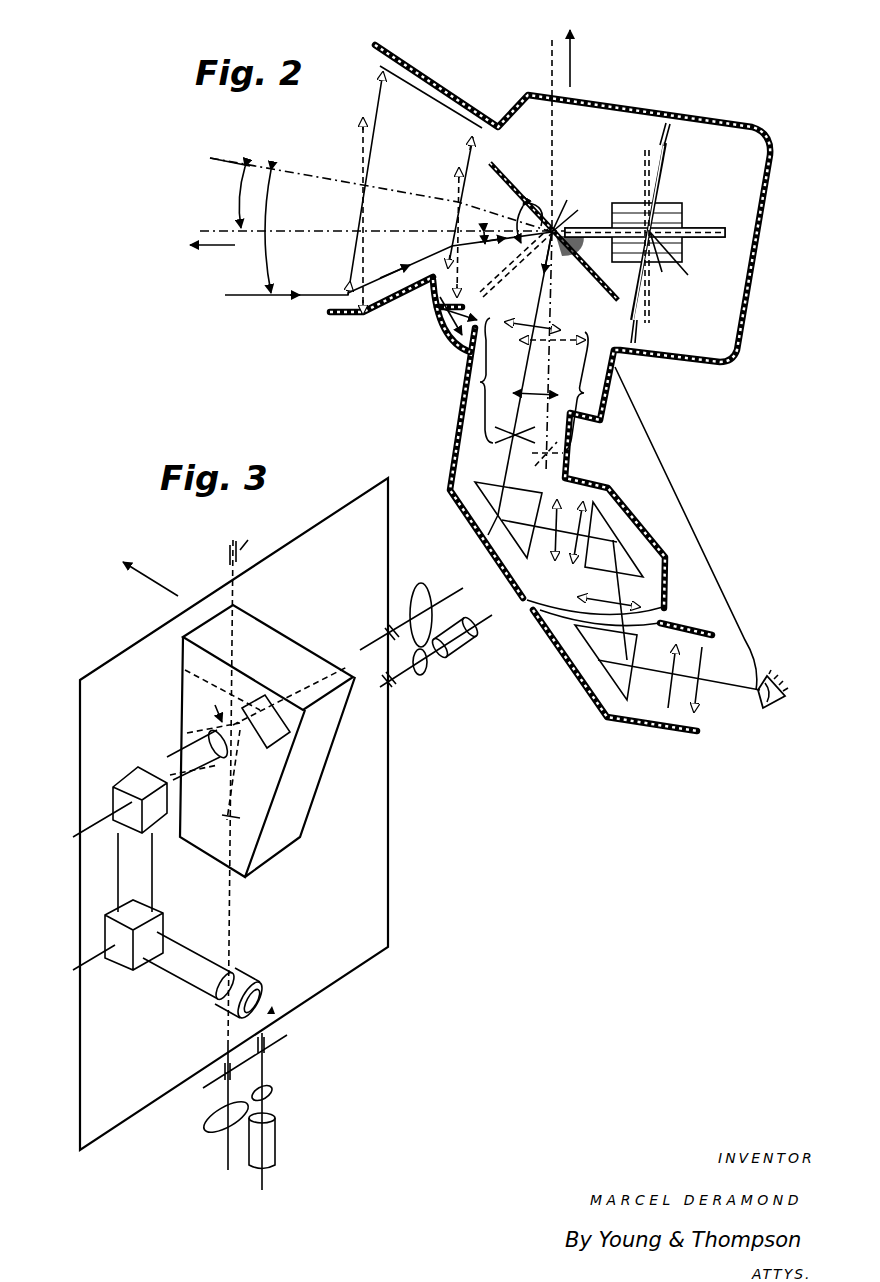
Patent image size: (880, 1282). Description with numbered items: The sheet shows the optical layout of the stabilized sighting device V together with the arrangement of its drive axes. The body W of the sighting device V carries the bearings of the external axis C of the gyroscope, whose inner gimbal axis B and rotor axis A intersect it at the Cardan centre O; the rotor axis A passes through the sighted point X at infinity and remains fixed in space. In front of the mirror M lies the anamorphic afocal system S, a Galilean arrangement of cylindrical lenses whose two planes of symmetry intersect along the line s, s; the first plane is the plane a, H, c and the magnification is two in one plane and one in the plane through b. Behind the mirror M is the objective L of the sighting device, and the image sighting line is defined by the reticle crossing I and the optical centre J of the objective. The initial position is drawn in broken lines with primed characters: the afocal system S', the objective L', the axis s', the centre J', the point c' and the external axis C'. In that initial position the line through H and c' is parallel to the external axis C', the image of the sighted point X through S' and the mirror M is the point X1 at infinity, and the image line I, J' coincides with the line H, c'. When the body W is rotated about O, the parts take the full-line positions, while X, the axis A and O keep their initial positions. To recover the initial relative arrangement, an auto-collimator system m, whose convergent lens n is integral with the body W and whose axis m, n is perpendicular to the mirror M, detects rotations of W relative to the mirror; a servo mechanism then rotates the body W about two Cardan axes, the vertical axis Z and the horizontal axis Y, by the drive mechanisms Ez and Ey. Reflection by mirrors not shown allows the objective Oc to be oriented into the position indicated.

In FIG. 2, the body of the sighting device W is at (697, 366).
In FIG. 3, the body of the sighting device W is at (320, 745).
In FIG. 2, the auto-collimator system m is at (445, 338).
In FIG. 3, the auto-collimator system m is at (190, 735).
In FIG. 2, the convergent lens of the auto-collimator n is at (463, 347).
In FIG. 3, the convergent lens of the auto-collimator n is at (212, 707).
In FIG. 2, the sighted point at infinity X is at (212, 258).
In FIG. 3, the sighted point at infinity X is at (150, 579).
In FIG. 2, the image point at infinity X1 is at (575, 131).
In FIG. 2, the axis point a is at (382, 195).
In FIG. 2, the objective L is at (388, 257).
In FIG. 2, the objective in initial position L' is at (570, 399).
In FIG. 2, the reticle crossing I is at (515, 422).
In FIG. 3, the reticle crossing I is at (173, 777).
In FIG. 2, the anamorphic afocal system S is at (431, 96).
In FIG. 2, the anamorphic afocal system in initial position S' is at (437, 135).
In FIG. 2, the axis of the anamorphic system s is at (423, 183).
In FIG. 3, the axis of the anamorphic system s is at (266, 693).
In FIG. 2, the axis of the anamorphic system in initial position s' is at (412, 220).
In FIG. 2, the mirror M is at (511, 182).
In FIG. 3, the mirror M is at (305, 760).
In FIG. 2, the pivot K is at (534, 203).
In FIG. 2, the plane point b is at (570, 205).
In FIG. 2, the point H is at (559, 352).
In FIG. 2, the optical centre of the objective J is at (529, 373).
In FIG. 3, the optical centre of the objective J is at (213, 758).
In FIG. 2, the optical centre of the objective in initial position J' is at (549, 367).
In FIG. 2, the plane point c is at (562, 293).
In FIG. 2, the plane point c in initial position c' is at (564, 310).
In FIG. 2, the normal N is at (496, 305).
In FIG. 2, the normal N' is at (515, 263).
In FIG. 2, the rotor axis A is at (713, 226).
In FIG. 2, the Cardan centre O is at (650, 232).
In FIG. 2, the inner gimbal axis B is at (671, 264).
In FIG. 2, the external gyroscope axis C is at (665, 240).
In FIG. 2, the external gyroscope axis in initial position C' is at (655, 227).
In FIG. 2, the sighting device V is at (695, 510).
In FIG. 2, the objective Oc is at (677, 705).
In FIG. 3, the objective Oc is at (254, 968).
In FIG. 3, the vertical axis Z is at (293, 1063).
In FIG. 3, the drive mechanism Ez is at (285, 1117).
In FIG. 3, the horizontal axis Y is at (453, 577).
In FIG. 3, the drive mechanism Ey is at (460, 655).